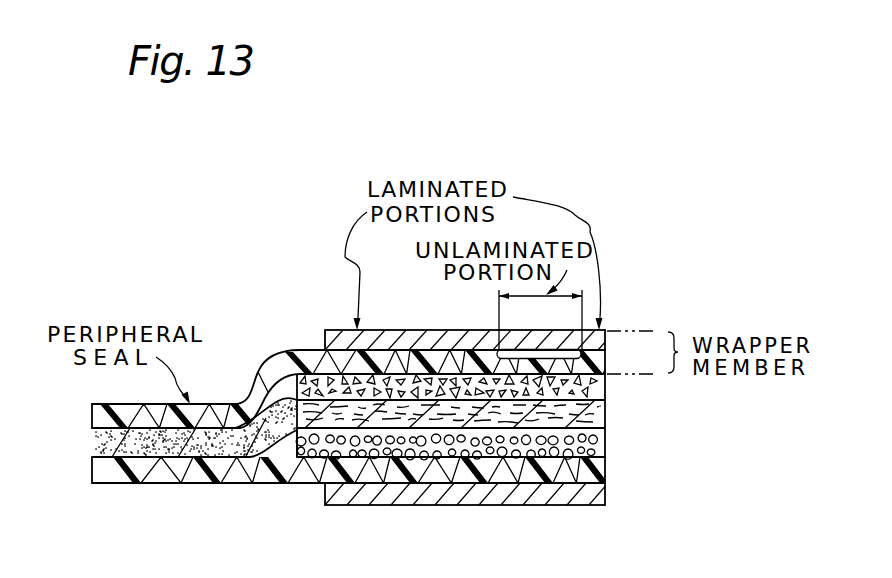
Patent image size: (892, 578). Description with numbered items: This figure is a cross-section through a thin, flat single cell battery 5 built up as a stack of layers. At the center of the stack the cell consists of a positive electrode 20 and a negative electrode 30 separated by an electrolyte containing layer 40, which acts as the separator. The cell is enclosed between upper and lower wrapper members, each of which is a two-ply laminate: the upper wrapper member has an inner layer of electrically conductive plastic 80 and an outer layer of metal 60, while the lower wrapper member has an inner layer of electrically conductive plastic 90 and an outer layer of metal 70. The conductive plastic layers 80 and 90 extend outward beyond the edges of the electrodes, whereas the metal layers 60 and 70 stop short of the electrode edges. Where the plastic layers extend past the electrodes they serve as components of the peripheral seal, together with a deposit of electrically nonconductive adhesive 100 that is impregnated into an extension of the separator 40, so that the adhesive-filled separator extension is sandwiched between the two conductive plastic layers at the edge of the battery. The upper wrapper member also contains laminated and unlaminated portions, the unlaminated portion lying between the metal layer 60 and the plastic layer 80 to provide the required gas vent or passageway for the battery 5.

The battery 5 is at (340, 401).
The outer layer of metal 60 is at (606, 341).
The inner layer of electrically conductive plastic 80 is at (609, 358).
The positive electrode 20 is at (606, 389).
The electrolyte containing layer 40 is at (605, 413).
The negative electrode 30 is at (605, 438).
The inner layer of electrically conductive plastic 90 is at (605, 466).
The outer layer of metal 70 is at (605, 492).
The electrically nonconductive adhesive 100 is at (105, 442).